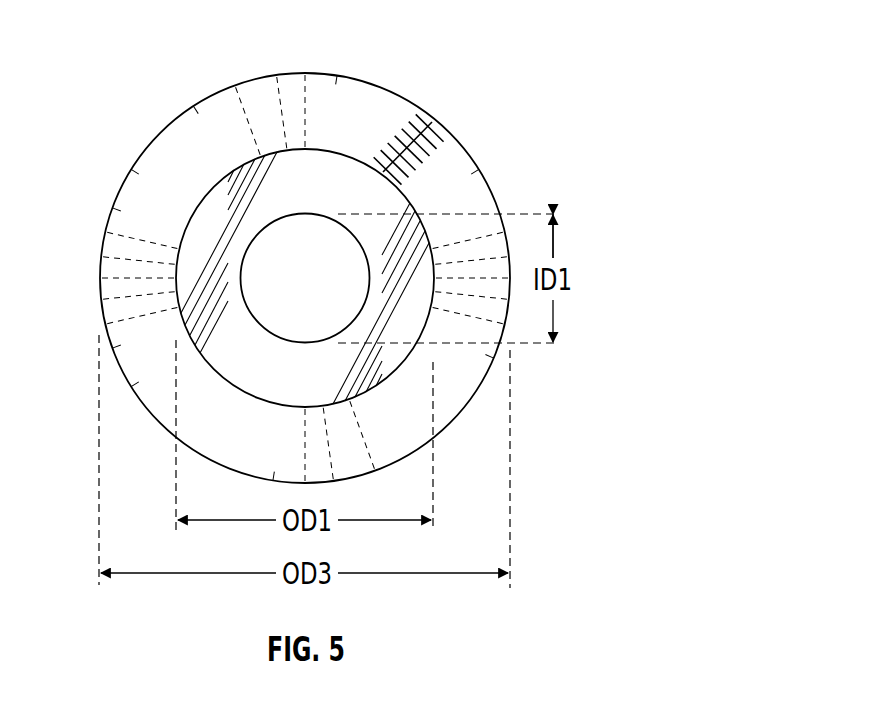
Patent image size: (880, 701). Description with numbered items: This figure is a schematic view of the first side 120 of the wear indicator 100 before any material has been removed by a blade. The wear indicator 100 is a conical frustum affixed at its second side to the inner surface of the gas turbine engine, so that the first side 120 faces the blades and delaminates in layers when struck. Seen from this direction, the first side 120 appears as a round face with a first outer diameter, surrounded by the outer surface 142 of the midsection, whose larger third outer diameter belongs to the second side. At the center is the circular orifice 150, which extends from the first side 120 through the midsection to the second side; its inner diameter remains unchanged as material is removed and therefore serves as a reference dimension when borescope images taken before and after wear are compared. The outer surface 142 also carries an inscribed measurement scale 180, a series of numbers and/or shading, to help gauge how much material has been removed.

The wear indicator 100 is at (122, 80).
The first side 120 is at (353, 172).
The outer surface 142 is at (127, 263).
The orifice 150 is at (278, 258).
The measurement scale 180 is at (442, 155).